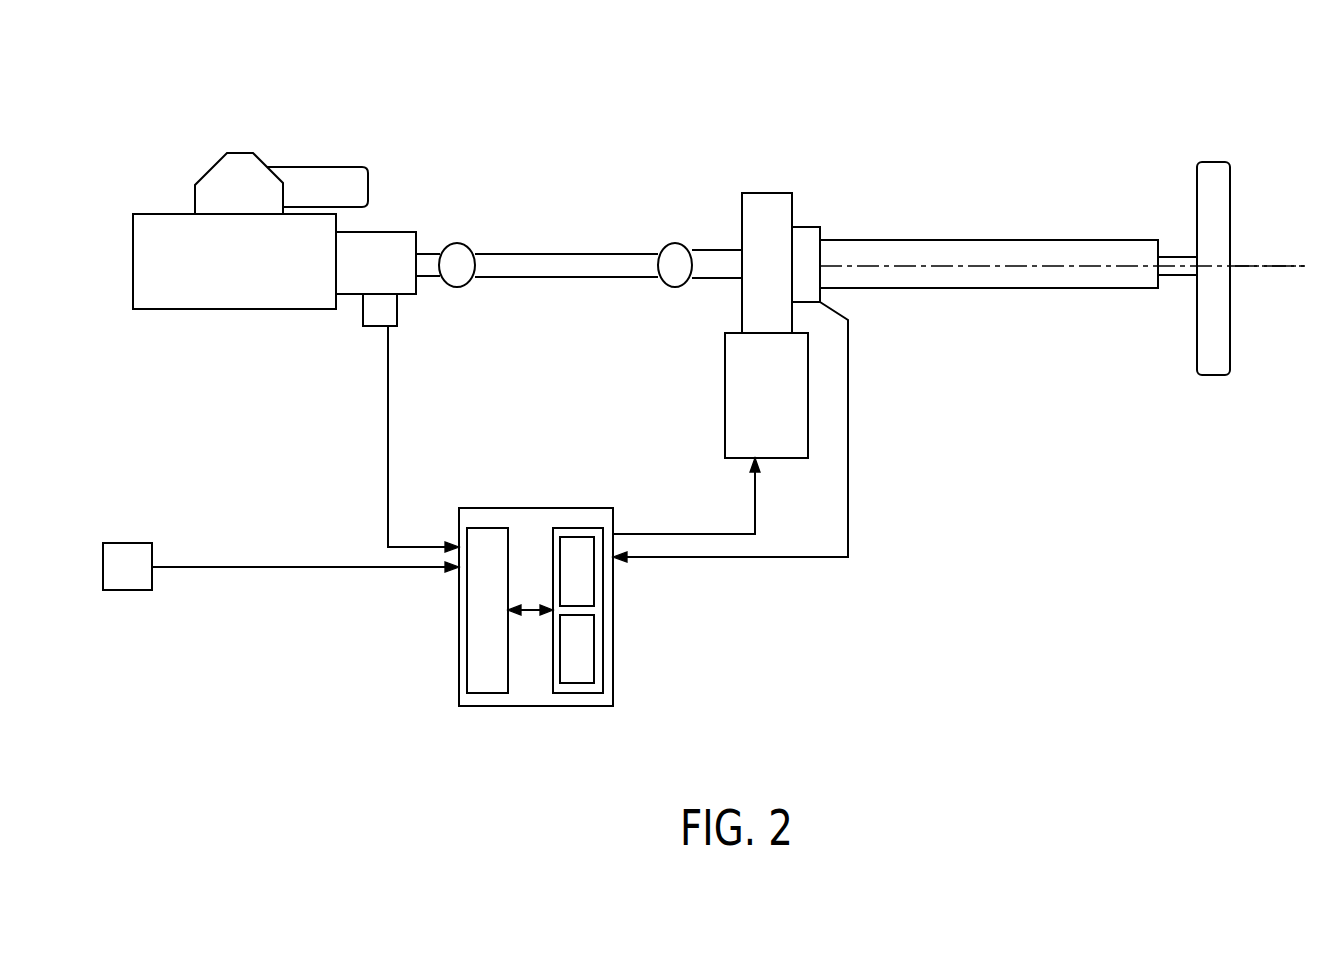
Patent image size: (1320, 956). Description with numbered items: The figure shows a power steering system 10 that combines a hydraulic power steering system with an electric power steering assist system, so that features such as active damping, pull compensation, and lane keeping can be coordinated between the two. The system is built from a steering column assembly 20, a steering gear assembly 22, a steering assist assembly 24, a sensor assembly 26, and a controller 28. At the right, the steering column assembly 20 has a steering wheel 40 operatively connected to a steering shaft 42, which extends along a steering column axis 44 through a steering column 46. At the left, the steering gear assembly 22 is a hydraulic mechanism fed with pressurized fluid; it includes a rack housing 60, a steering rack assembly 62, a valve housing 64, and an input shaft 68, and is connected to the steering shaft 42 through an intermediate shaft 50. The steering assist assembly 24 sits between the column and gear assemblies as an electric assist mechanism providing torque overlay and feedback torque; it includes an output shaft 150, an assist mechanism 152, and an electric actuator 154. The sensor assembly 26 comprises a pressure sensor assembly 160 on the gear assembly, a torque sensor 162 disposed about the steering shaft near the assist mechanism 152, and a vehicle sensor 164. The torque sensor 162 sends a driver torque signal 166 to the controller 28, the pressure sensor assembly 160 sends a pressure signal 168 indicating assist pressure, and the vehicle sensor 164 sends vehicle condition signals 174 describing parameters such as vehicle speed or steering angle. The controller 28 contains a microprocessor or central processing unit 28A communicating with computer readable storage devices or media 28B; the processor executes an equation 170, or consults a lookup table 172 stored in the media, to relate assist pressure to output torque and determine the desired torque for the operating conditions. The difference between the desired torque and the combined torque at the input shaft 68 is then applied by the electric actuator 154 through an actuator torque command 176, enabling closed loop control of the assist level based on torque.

The power steering system 10 is at (1030, 120).
The steering column assembly 20 is at (1100, 398).
The steering gear assembly 22 is at (158, 158).
The steering assist assembly 24 is at (793, 105).
The sensor assembly 26 is at (240, 425).
The controller 28 is at (528, 722).
The microprocessor or central processing unit 28A is at (488, 528).
The computer readable storage devices or media 28B is at (577, 528).
The steering wheel 40 is at (1215, 162).
The steering shaft 42 is at (1173, 275).
The steering column axis 44 is at (1278, 267).
The steering column 46 is at (970, 288).
The intermediate shaft 50 is at (545, 252).
The rack housing 60 is at (223, 312).
The steering rack assembly 62 is at (280, 167).
The valve housing 64 is at (390, 232).
The input shaft 68 is at (430, 277).
The output shaft 150 is at (698, 248).
The assist mechanism 152 is at (757, 193).
The electric actuator 154 is at (725, 398).
The pressure sensor assembly 160 is at (363, 317).
The torque sensor 162 is at (810, 223).
The vehicle sensor 164 is at (120, 590).
The driver torque signal 166 is at (849, 506).
The pressure signal 168 is at (388, 428).
The equation 170 is at (595, 568).
The lookup table 172 is at (595, 648).
The vehicle condition signals 174 is at (292, 567).
The actuator torque command 176 is at (755, 508).